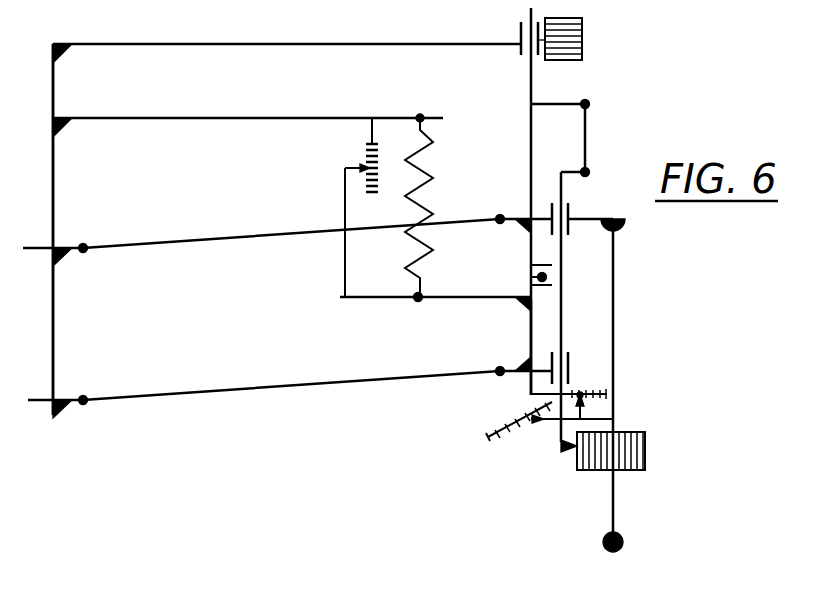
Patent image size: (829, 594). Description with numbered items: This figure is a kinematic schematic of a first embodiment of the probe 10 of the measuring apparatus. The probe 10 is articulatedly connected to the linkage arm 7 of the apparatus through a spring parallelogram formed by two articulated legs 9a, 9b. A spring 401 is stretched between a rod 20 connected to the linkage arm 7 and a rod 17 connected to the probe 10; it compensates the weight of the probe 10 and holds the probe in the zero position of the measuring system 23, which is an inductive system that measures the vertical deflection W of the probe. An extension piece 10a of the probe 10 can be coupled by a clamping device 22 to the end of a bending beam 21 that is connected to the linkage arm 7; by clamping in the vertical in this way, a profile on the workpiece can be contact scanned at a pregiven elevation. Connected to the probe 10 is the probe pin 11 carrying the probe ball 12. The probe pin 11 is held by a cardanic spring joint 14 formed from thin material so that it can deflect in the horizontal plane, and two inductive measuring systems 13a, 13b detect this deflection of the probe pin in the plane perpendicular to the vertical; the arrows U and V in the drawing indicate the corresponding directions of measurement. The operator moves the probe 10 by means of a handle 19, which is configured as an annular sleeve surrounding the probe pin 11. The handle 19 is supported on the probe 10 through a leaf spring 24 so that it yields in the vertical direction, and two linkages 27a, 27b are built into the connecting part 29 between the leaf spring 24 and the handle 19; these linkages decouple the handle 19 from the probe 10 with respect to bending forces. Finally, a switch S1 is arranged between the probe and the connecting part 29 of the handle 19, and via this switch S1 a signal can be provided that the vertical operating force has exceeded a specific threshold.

The linkage arm 7 is at (42, 400).
The articulated leg 9a is at (240, 230).
The articulated leg 9b is at (262, 393).
The probe 10 is at (531, 332).
The extension piece 10a is at (531, 79).
The probe pin 11 is at (614, 326).
The probe ball 12 is at (623, 545).
The inductive measuring system 13a is at (513, 428).
The inductive measuring system 13b is at (580, 389).
The cardanic spring joint 14 is at (617, 226).
The rod 17 is at (384, 303).
The handle 19 is at (645, 455).
The rod 20 is at (215, 118).
The bending beam 21 is at (272, 44).
The clamping device 22 is at (583, 40).
The measuring system 23 is at (372, 167).
The leaf spring 24 is at (560, 104).
The linkage 27a is at (595, 101).
The linkage 27b is at (582, 170).
The connecting part 29 is at (562, 325).
The spring 401 is at (436, 168).
The switch S1 is at (524, 274).
The direction arrow U is at (551, 411).
The direction arrow V is at (604, 403).
The vertical deflection W is at (353, 220).